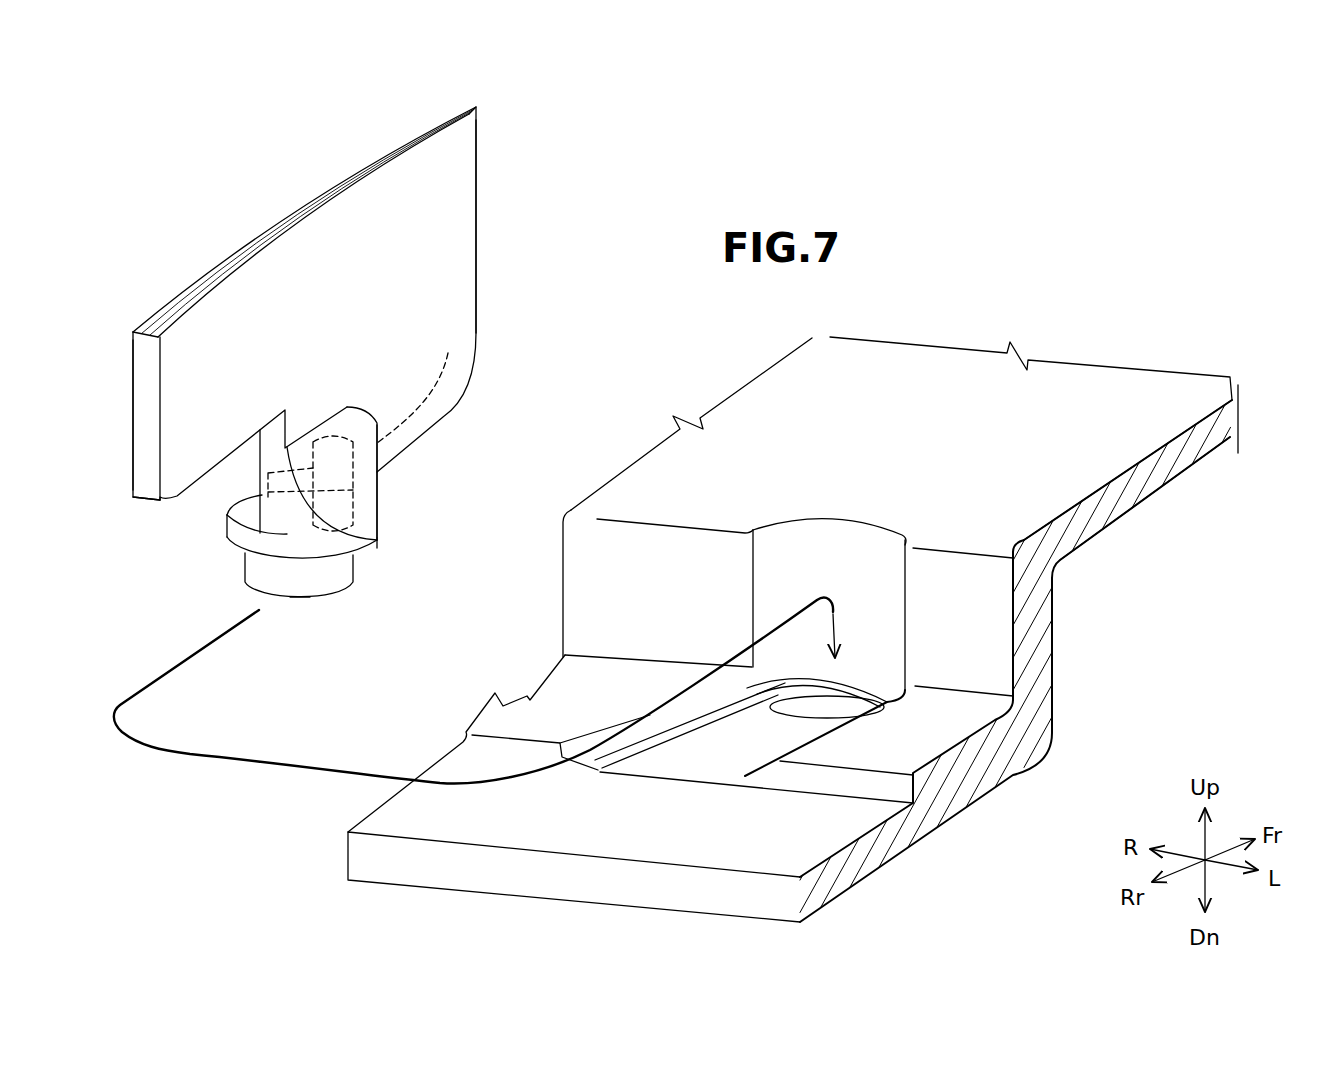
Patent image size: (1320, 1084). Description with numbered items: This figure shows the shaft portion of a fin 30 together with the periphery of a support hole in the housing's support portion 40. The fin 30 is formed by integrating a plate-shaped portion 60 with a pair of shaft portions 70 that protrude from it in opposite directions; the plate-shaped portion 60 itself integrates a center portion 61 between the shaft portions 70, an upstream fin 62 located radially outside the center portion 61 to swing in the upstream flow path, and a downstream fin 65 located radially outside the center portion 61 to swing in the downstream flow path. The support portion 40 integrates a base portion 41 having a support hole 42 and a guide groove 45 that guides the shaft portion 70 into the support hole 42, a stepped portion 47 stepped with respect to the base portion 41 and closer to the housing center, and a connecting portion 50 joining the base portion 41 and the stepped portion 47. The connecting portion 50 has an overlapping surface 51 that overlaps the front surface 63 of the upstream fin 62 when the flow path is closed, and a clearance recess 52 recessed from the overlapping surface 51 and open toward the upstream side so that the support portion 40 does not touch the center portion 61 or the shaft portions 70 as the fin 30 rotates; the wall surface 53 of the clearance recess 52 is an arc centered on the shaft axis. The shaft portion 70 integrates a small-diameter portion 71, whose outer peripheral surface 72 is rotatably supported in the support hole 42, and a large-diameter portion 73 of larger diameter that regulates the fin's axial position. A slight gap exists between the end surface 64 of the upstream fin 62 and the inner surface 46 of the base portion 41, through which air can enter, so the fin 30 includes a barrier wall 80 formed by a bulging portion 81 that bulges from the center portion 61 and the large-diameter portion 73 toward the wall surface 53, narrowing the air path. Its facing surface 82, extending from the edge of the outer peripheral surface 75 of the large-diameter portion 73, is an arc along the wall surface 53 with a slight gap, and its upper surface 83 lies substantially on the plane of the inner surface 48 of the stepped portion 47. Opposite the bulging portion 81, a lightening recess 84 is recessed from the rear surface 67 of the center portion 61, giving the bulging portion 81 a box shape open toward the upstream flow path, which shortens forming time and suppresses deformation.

The fin 30 is at (484, 167).
The support portion 40 is at (1068, 699).
The base portion 41 is at (948, 792).
The support hole 42 is at (833, 707).
The guide groove 45 is at (690, 767).
The inner surface 46 is at (570, 695).
The stepped portion 47 is at (1150, 475).
The inner surface 48 is at (1060, 385).
The connecting portion 50 is at (1037, 632).
The overlapping surface 51 is at (692, 558).
The clearance recess 52 is at (815, 546).
The wall surface 53 is at (873, 553).
The plate-shaped portion 60 is at (353, 53).
The center portion 61 is at (322, 247).
The upstream fin 62 is at (440, 153).
The front surface 63 is at (458, 268).
The end surface 64 is at (407, 437).
The downstream fin 65 is at (193, 332).
The rear surface 67 is at (257, 493).
The shaft portion 70 is at (418, 645).
The small-diameter portion 71 is at (317, 583).
The outer peripheral surface 72 is at (257, 575).
The large-diameter portion 73 is at (367, 537).
The outer peripheral surface 75 is at (233, 537).
The barrier wall 80 is at (415, 444).
The bulging portion 81 is at (398, 486).
The facing surface 82 is at (370, 503).
The upper surface 83 is at (342, 427).
The lightening recess 84 is at (245, 438).